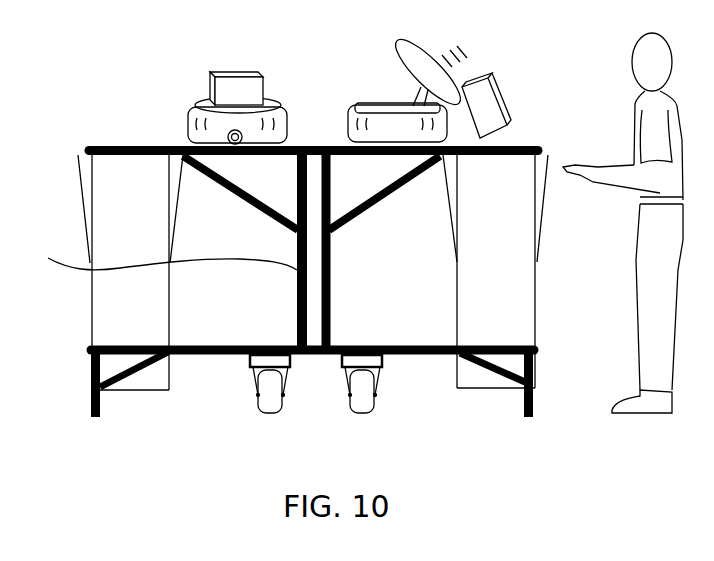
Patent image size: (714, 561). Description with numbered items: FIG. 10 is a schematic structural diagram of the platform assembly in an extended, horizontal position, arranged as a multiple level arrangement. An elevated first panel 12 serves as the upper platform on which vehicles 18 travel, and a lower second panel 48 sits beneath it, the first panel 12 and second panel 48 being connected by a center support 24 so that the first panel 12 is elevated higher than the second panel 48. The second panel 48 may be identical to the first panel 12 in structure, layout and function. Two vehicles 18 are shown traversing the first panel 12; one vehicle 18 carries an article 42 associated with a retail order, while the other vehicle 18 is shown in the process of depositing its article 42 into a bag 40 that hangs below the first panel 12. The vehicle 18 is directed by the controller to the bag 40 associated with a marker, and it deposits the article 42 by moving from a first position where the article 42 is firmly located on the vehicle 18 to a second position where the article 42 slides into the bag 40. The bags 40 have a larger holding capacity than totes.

The first panel 12 is at (90, 150).
The vehicle 18 is at (197, 100).
The center support 24 is at (157, 257).
The bag 40 is at (105, 306).
The article 42 is at (242, 73).
The second panel 48 is at (208, 357).